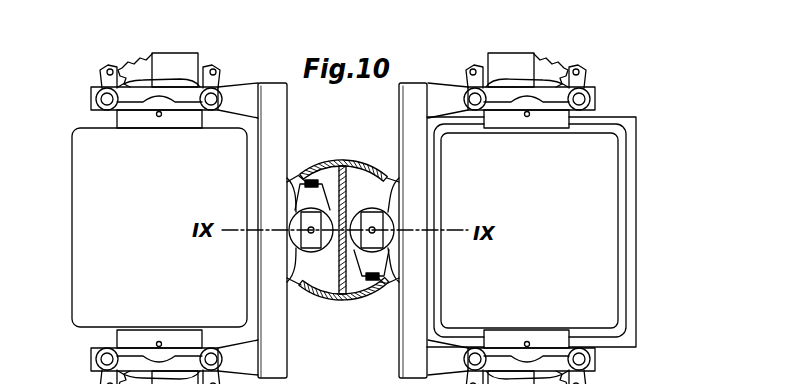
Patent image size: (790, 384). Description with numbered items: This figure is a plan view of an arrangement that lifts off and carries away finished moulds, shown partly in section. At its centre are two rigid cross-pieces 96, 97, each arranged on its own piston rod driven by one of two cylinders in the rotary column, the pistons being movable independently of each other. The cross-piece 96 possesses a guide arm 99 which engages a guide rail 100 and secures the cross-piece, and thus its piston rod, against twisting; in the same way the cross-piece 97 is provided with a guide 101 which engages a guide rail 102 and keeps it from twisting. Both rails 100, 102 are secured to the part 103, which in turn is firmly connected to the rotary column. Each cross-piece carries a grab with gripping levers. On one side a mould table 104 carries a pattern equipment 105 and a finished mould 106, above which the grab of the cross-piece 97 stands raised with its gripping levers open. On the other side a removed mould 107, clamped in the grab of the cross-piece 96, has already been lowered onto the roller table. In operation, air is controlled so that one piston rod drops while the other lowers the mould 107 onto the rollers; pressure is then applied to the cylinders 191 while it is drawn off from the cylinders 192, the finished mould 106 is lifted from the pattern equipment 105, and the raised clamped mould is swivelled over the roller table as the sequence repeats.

The cross-piece 96 is at (289, 105).
The cross-piece 97 is at (397, 343).
The guide arm 99 is at (332, 182).
The guide rail 100 is at (306, 179).
The guide 101 is at (355, 271).
The guide rail 102 is at (369, 282).
The part 103 is at (313, 298).
The mould table 104 is at (617, 113).
The pattern equipment 105 is at (625, 126).
The finished mould 106 is at (620, 156).
The removed mould 107 is at (81, 127).
The cylinders 191 is at (530, 55).
The cylinders 192 is at (161, 51).